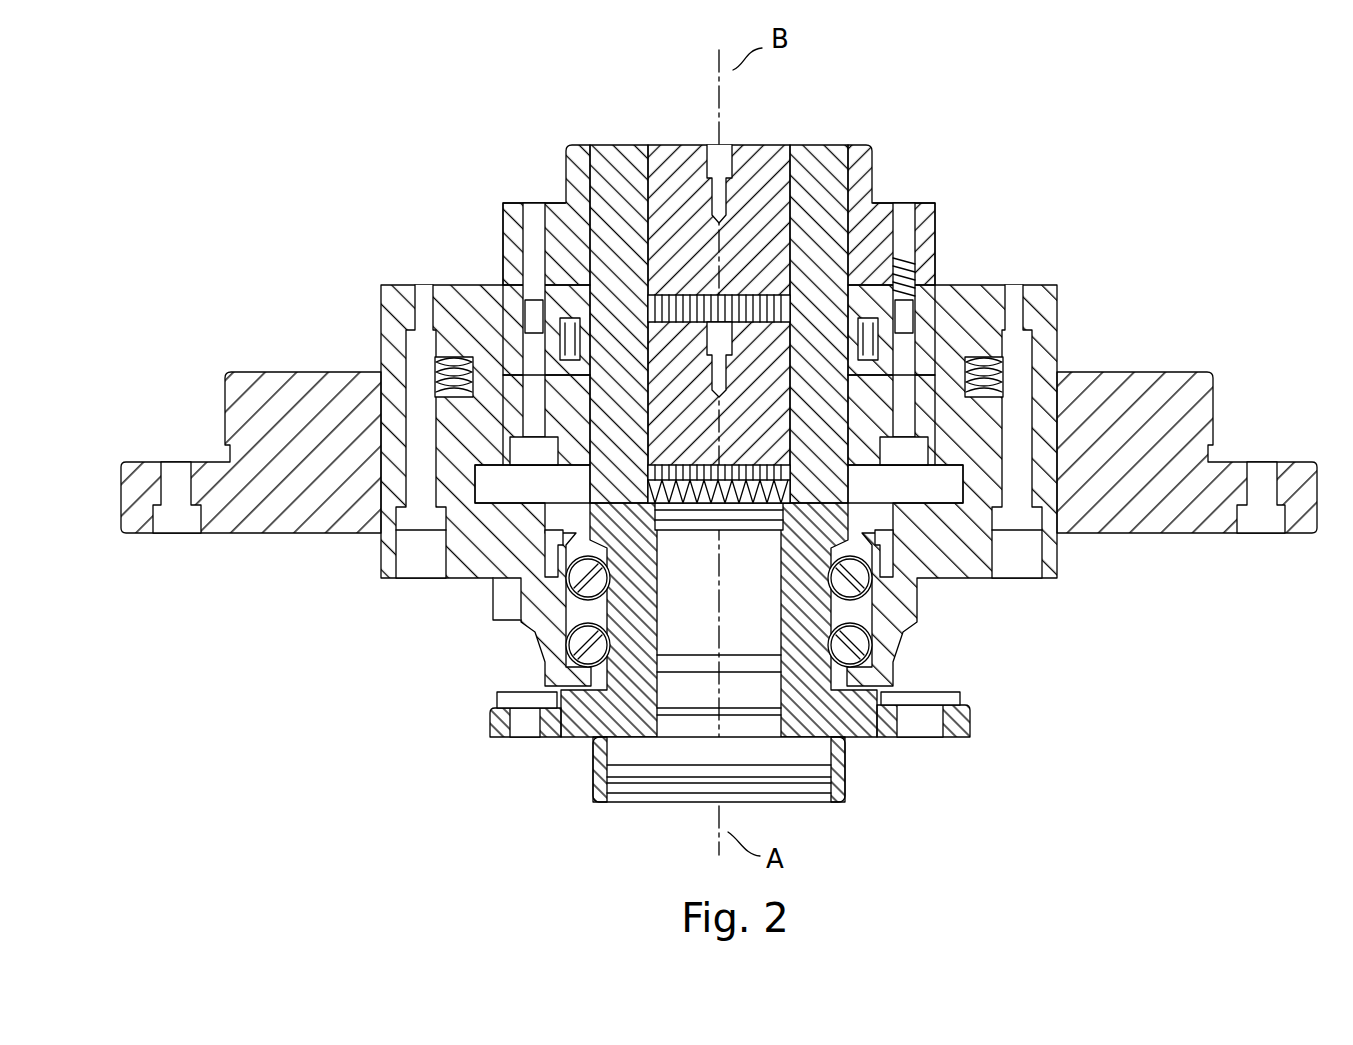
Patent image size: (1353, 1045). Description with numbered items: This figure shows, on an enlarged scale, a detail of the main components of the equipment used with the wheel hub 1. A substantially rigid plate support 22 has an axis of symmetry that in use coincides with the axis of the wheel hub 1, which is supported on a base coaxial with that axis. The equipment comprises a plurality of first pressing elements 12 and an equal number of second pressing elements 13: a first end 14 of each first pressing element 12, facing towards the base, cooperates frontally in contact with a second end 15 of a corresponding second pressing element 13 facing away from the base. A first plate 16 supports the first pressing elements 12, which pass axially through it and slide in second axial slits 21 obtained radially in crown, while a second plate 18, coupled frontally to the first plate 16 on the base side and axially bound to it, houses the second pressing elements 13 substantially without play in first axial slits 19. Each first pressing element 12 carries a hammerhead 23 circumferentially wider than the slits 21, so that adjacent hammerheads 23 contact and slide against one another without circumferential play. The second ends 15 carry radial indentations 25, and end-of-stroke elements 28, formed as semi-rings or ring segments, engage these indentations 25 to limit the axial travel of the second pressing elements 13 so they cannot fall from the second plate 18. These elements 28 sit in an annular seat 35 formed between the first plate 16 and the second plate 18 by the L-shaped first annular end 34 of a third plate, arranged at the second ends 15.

The wheel hub 1 is at (966, 657).
The first pressing element 12 is at (644, 200).
The second pressing element 13 is at (520, 352).
The first end 14 is at (617, 285).
The second end 15 is at (760, 200).
The first plate 16 is at (552, 234).
The second plate 18 is at (600, 437).
The first axial slit 19 is at (850, 510).
The second axial slit 21 is at (798, 191).
The plate support 22 is at (1195, 392).
The hammerhead 23 is at (618, 150).
The radial indentation 25 is at (738, 478).
The end-of-stroke element 28 is at (575, 318).
The first annular end 34 is at (852, 335).
The annular seat 35 is at (587, 312).